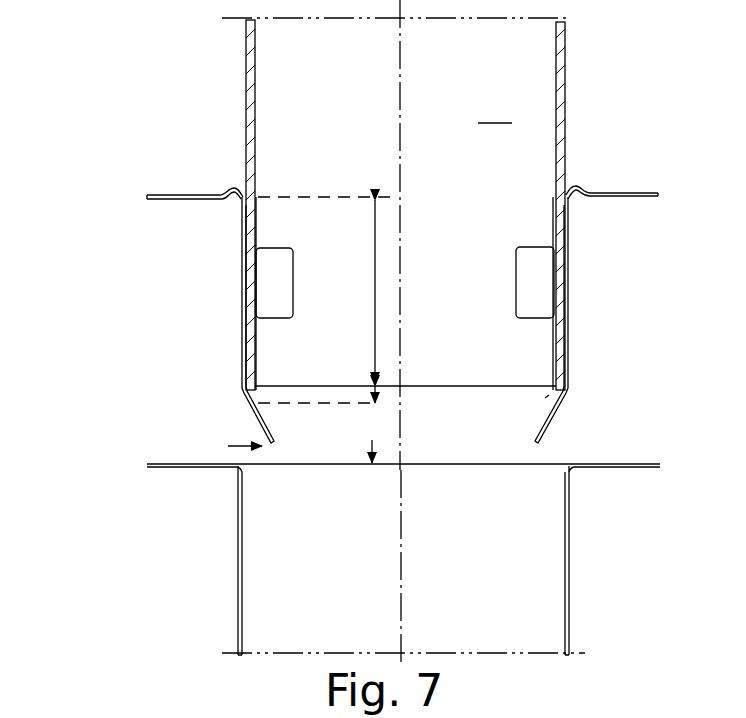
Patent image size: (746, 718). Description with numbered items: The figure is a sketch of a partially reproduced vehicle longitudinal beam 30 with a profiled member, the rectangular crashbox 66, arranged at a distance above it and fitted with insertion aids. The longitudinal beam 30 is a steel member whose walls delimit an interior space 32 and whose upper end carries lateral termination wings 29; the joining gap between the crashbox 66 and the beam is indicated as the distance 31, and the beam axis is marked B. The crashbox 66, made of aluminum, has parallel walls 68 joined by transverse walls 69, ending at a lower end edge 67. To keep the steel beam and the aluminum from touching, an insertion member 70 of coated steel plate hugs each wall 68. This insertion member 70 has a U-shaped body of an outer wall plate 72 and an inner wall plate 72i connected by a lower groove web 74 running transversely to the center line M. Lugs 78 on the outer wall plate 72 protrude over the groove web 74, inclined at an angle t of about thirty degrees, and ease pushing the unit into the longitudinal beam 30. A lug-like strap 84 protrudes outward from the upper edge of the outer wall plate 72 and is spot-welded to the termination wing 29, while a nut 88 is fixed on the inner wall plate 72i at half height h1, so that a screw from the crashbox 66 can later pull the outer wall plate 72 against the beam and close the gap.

The lateral termination wing 29 is at (612, 464).
The vehicle longitudinal beam 30 is at (340, 522).
The gap 31 is at (372, 435).
The interior space 32 is at (569, 592).
The crashbox 66 is at (401, 204).
The end edge 67 is at (445, 386).
The crashbox wall 68 is at (246, 97).
The transverse wall 69 is at (495, 110).
The insertion member 70 is at (374, 295).
The outer wall plate 72 is at (425, 295).
The inner wall plate 72i is at (257, 331).
The groove web 74 is at (545, 398).
The lug 78 is at (250, 416).
The strap 84 is at (196, 195).
The nut 88 is at (275, 286).
The center line M is at (400, 112).
The axis of lower housing B is at (401, 527).
The half height h1 is at (324, 290).
The inclination angle t is at (318, 407).